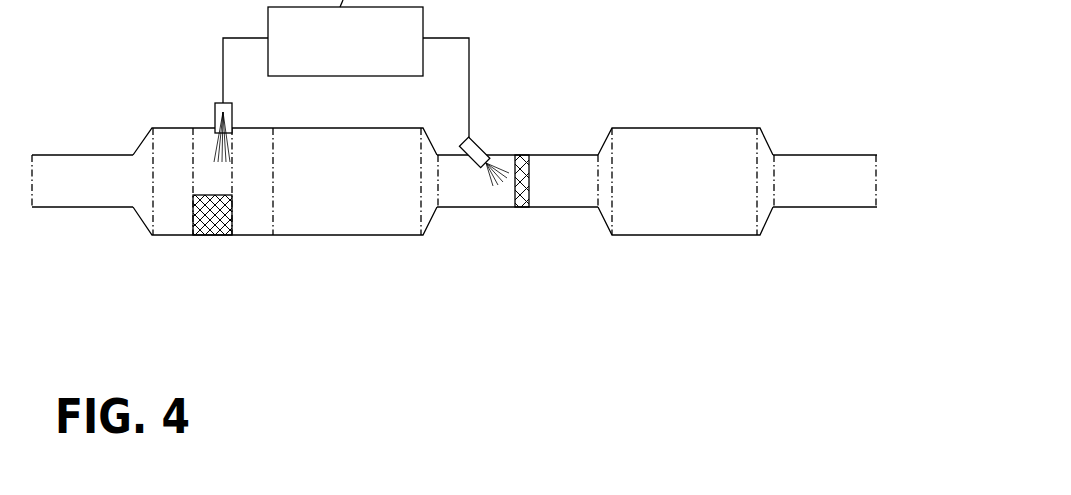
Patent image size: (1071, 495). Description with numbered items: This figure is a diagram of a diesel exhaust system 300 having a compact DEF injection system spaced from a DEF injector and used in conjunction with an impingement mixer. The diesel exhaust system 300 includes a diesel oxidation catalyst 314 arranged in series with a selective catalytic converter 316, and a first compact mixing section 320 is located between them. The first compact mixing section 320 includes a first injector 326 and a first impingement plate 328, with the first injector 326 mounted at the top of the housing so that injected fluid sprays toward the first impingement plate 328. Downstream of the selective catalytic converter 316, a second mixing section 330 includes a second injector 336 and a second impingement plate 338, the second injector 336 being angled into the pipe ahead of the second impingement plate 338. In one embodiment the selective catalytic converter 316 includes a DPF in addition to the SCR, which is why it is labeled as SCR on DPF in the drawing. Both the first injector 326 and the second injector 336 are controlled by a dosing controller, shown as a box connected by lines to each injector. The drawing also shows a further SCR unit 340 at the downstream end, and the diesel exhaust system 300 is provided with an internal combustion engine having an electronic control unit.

The diesel exhaust system 300 is at (454, 178).
The diesel oxidation catalyst 314 is at (163, 128).
The selective catalytic converter 316 is at (350, 237).
The first compact mixing section 320 is at (215, 175).
The first injector 326 is at (213, 128).
The first impingement plate 328 is at (210, 232).
The second mixing section 330 is at (511, 162).
The second injector 336 is at (488, 147).
The second impingement plate 338 is at (528, 173).
The SCR catalyst 340 is at (680, 128).